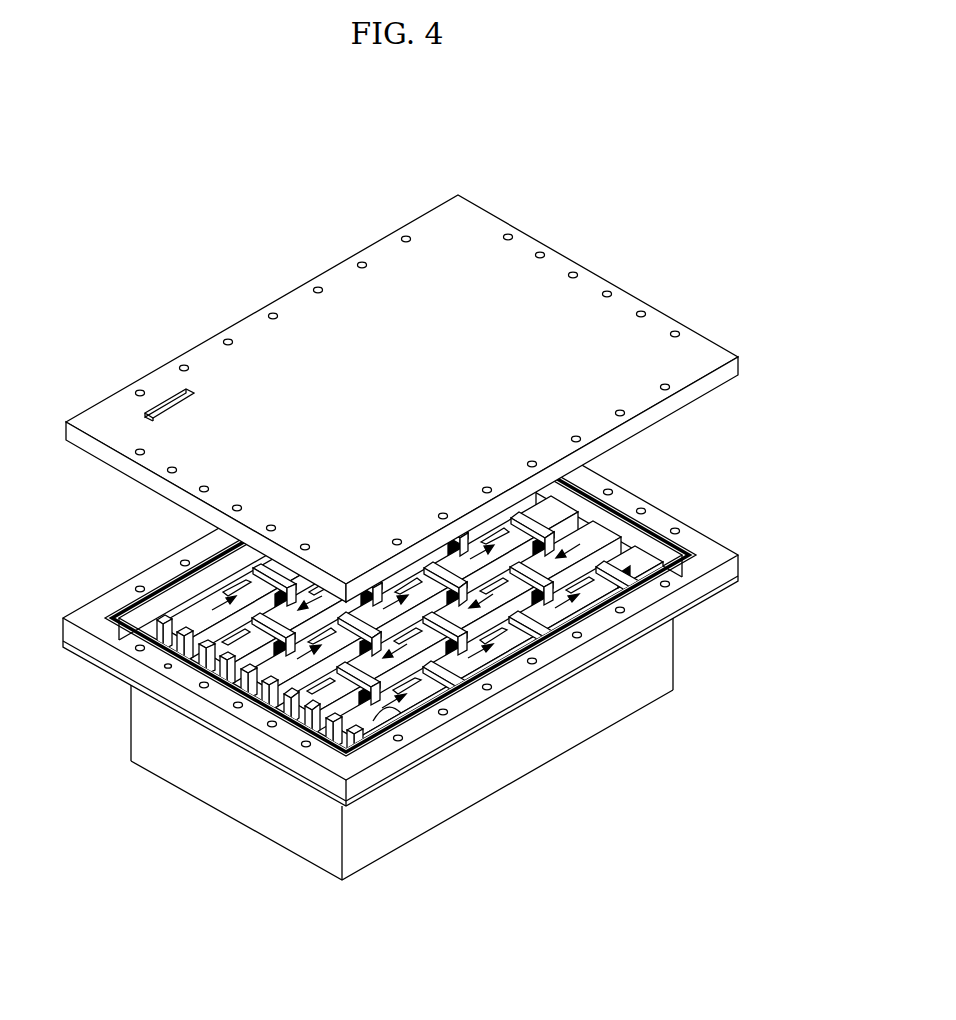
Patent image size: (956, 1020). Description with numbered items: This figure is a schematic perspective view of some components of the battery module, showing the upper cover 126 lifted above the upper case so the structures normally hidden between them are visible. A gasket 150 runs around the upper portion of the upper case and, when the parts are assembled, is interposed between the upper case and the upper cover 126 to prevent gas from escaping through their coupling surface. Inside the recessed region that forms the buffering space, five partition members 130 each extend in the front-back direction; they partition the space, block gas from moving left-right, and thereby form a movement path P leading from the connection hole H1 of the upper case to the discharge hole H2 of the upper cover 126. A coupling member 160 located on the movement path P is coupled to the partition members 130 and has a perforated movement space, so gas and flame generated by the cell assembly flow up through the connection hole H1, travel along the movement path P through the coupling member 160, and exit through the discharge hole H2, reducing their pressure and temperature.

The upper cover 126 is at (402, 398).
The discharge hole H2 is at (167, 409).
The gasket 150 is at (684, 551).
The partition member 130 is at (245, 562).
The coupling member 160 is at (166, 669).
The movement path P is at (520, 641).
The connection hole H1 is at (388, 707).